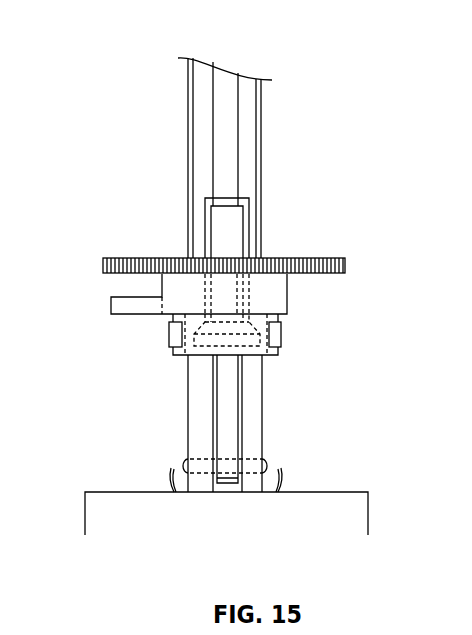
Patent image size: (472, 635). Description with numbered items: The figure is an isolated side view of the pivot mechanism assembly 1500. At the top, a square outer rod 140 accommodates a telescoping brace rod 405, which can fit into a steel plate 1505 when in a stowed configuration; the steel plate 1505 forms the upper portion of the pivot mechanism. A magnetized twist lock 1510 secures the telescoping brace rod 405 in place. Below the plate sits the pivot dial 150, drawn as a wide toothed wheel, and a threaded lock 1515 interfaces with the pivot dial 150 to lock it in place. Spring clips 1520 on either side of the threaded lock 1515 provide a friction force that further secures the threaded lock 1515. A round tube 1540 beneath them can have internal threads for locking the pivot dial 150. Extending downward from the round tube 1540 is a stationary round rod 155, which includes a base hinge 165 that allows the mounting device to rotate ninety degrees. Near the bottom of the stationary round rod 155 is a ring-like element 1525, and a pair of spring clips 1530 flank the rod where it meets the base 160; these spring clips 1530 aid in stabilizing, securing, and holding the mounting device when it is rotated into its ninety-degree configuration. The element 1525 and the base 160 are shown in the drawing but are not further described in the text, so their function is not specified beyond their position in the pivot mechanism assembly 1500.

The telescoping brace rod 405 is at (230, 70).
The square outer rod 140 is at (188, 120).
The steel plate 1505 is at (249, 210).
The magnetized twist lock 1510 is at (243, 247).
The pivot dial 150 is at (103, 265).
The threaded lock 1515 is at (287, 292).
The spring clips 1520 is at (282, 330).
The round tube 1540 is at (280, 353).
The stationary round rod 155 is at (188, 415).
The base hinge 165 is at (263, 390).
The ring 1525 is at (266, 460).
The spring clips 1530 is at (285, 487).
The base 160 is at (85, 515).
The pivot mechanism assembly 1500 is at (213, 550).